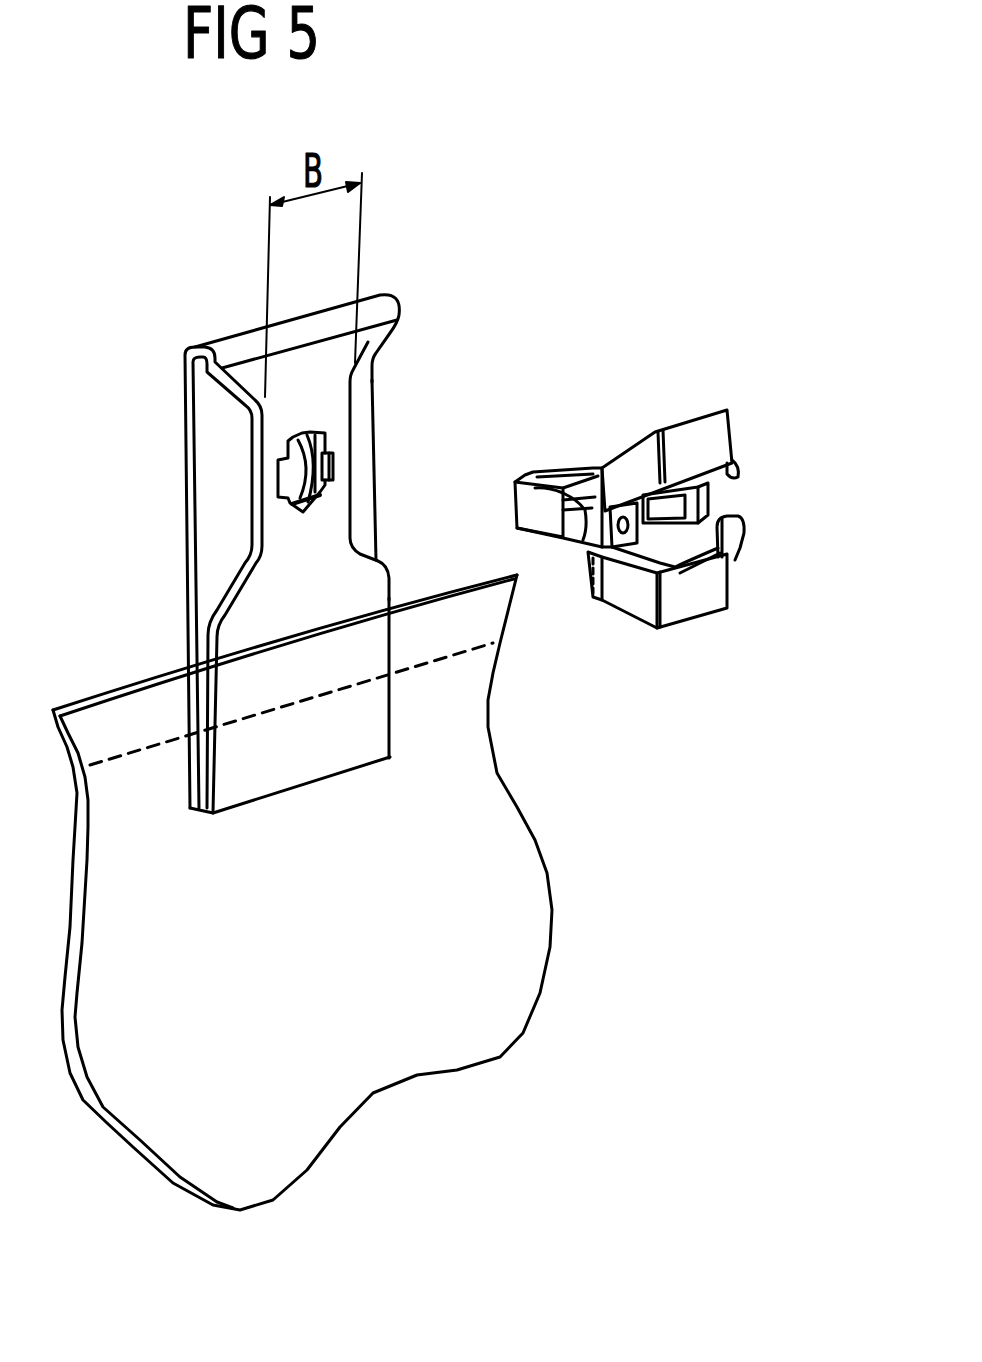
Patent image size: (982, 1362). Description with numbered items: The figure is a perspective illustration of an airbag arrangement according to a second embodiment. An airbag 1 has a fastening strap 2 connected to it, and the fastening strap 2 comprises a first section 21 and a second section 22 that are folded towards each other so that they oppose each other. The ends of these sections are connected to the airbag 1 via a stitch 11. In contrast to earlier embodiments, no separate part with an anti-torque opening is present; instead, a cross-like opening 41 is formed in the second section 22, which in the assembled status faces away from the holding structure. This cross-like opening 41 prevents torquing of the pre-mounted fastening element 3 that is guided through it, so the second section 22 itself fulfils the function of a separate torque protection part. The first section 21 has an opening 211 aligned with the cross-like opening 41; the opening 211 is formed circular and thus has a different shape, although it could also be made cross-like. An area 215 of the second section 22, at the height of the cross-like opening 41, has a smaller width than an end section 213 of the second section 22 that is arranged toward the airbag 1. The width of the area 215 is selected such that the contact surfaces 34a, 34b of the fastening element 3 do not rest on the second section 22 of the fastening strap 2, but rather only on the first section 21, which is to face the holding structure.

The airbag 1 is at (113, 1135).
The stitch 11 is at (118, 755).
The fastening strap 2 is at (190, 343).
The first section 21 is at (208, 463).
The opening 211 is at (365, 374).
The end section 213 is at (353, 652).
The area 215 is at (337, 413).
The second section 22 is at (342, 462).
The cross-like opening 41 is at (332, 467).
The fastening element 3 is at (747, 415).
The contact surface 34a is at (597, 473).
The contact surface 34b is at (700, 482).